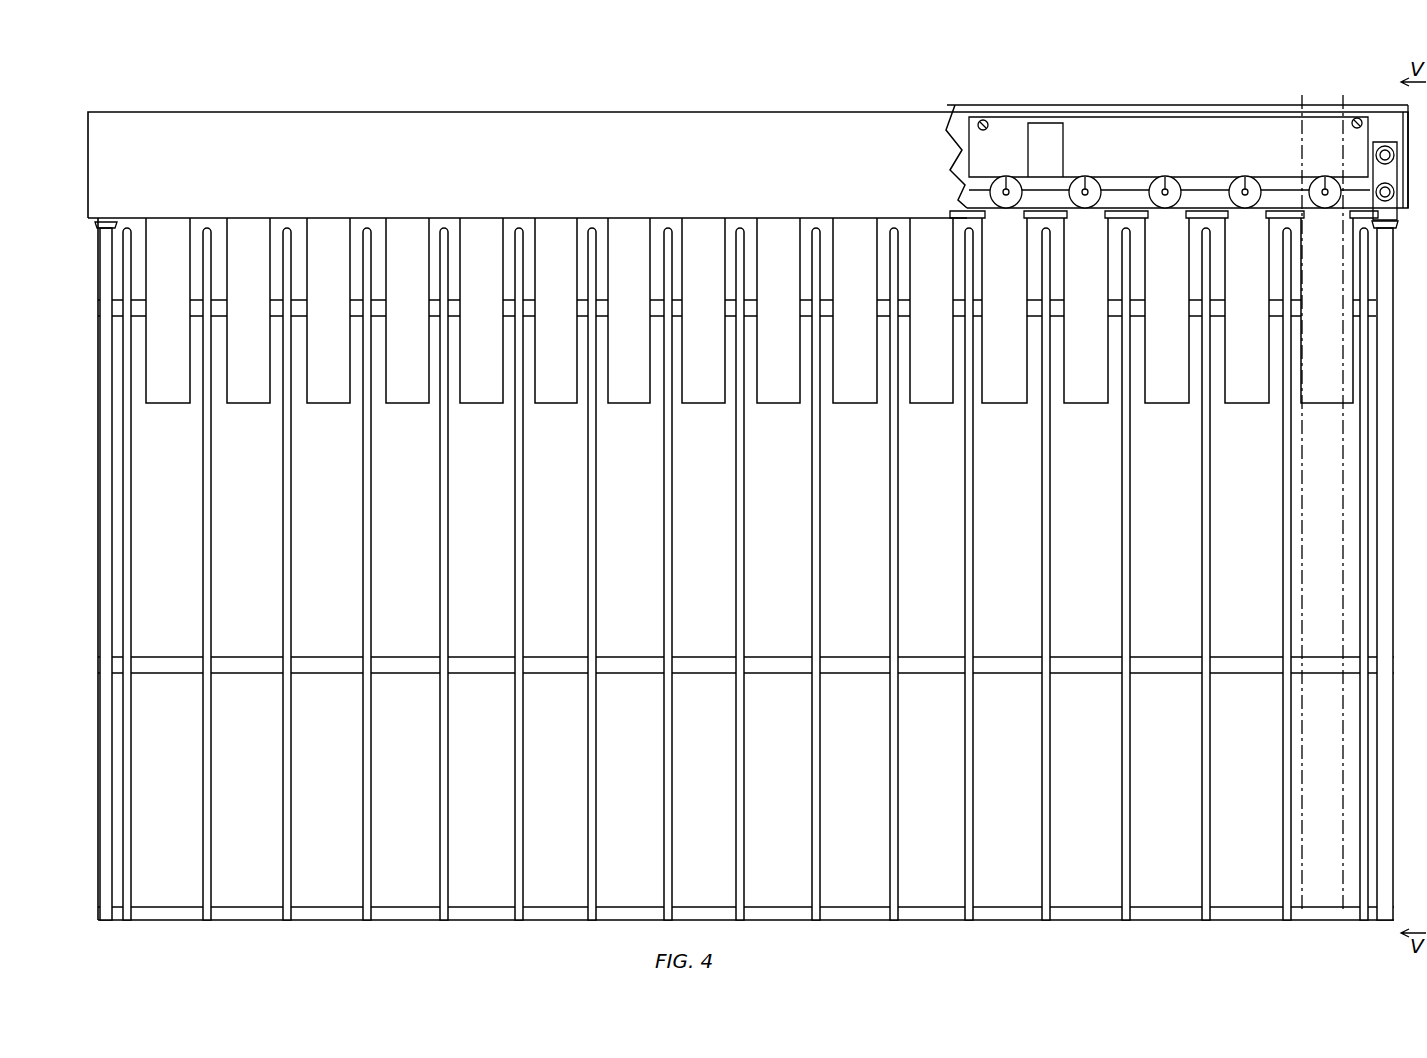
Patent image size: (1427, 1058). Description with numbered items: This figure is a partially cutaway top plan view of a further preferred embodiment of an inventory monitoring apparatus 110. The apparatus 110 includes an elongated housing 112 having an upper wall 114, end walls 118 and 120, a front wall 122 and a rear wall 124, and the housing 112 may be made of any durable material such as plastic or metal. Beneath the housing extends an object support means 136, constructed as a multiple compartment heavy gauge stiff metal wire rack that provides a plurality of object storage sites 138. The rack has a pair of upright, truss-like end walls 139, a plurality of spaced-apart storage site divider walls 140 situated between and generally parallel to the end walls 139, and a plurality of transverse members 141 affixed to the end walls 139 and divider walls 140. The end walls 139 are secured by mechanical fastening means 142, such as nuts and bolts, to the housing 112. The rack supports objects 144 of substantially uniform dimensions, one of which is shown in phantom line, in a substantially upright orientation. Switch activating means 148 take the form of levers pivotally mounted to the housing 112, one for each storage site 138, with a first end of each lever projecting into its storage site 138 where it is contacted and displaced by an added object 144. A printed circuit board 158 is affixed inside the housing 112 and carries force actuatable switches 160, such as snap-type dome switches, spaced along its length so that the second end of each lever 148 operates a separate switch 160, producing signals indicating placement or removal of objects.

The inventory monitoring apparatus 110 is at (242, 92).
The housing 112 is at (370, 108).
The upper wall 114 is at (680, 125).
The end wall 118 is at (92, 134).
The end wall 120 is at (1400, 118).
The front wall 122 is at (178, 224).
The rear wall 124 is at (965, 108).
The object support means 136 is at (105, 828).
The object storage sites 138 is at (186, 545).
The end walls 139 is at (107, 610).
The storage site divider walls 140 is at (203, 816).
The transverse members 141 is at (111, 323).
The mechanical fastening means 142 is at (1374, 190).
The objects 144 is at (1300, 591).
The switch activating means 148 is at (176, 404).
The printed circuit board 158 is at (962, 175).
The force actuatable switches 160 is at (1096, 184).